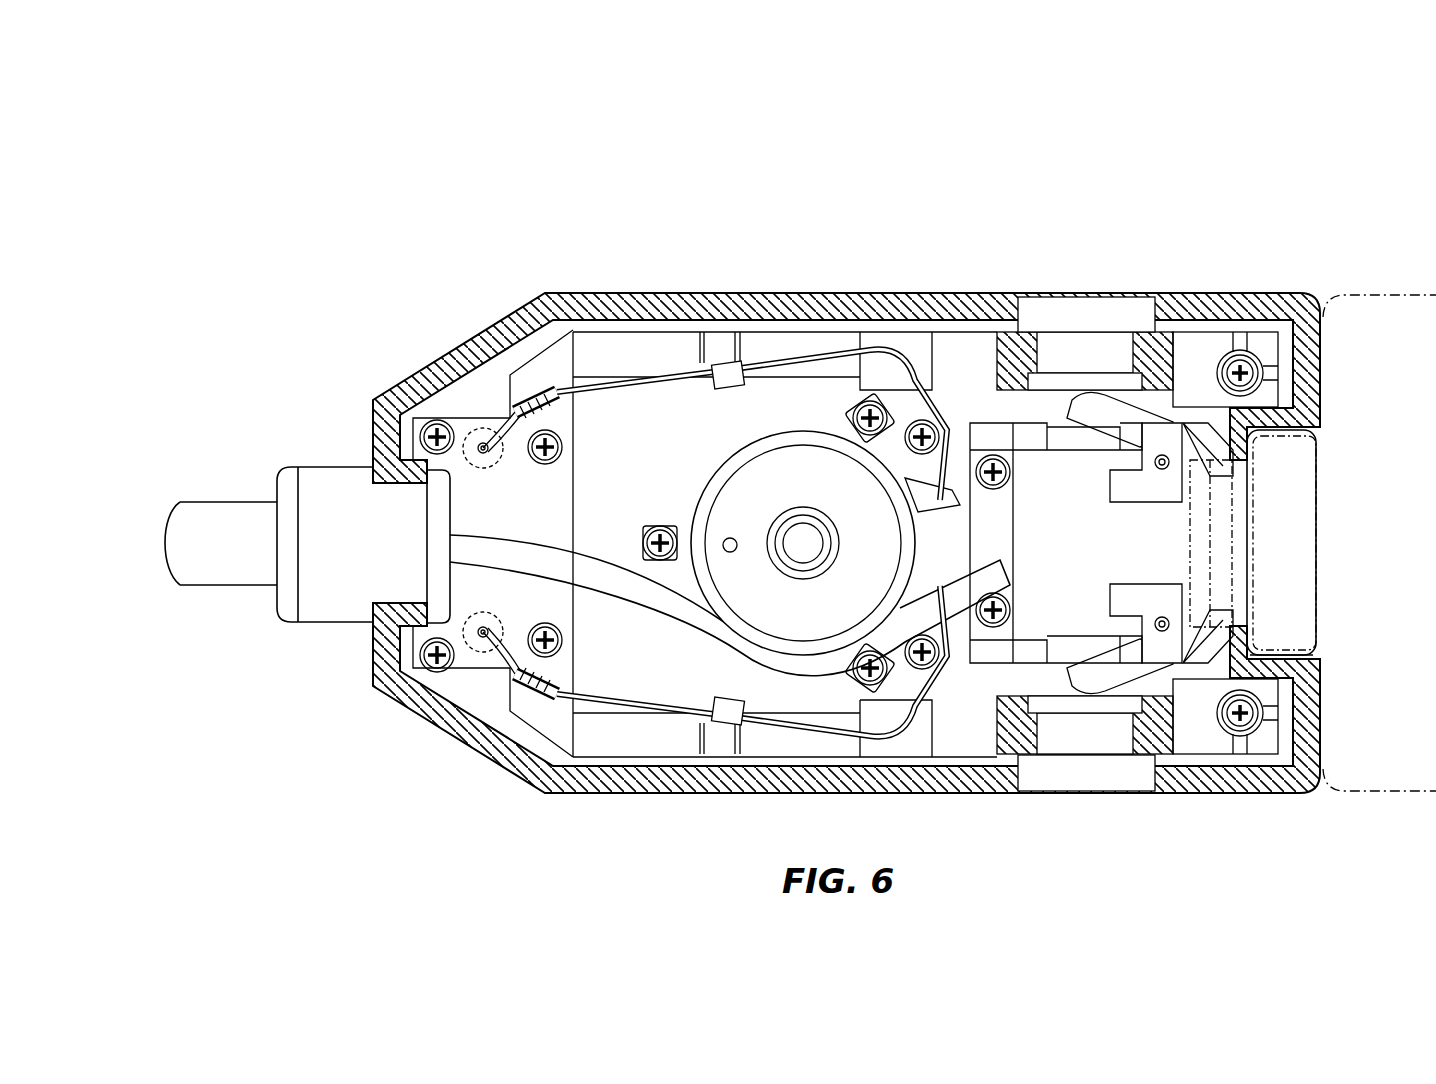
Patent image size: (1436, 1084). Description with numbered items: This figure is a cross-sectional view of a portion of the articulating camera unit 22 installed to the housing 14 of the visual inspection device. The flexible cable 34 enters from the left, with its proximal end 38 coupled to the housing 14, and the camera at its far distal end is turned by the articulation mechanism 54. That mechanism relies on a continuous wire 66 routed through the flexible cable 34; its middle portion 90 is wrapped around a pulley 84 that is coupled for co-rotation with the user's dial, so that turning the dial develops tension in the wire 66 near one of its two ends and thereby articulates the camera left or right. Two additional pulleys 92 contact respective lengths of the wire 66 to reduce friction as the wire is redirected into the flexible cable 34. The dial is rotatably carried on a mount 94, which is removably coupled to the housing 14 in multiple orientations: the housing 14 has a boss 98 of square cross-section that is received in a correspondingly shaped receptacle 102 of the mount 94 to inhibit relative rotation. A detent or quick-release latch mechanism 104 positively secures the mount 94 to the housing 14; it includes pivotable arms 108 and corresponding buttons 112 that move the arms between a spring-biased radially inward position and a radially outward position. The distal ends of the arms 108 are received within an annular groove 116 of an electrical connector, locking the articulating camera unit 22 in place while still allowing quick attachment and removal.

The housing 14 is at (1380, 297).
The articulating camera unit 22 is at (380, 180).
The flexible cable 34 is at (185, 592).
The proximal end 38 is at (278, 600).
The articulation mechanism 54 is at (650, 350).
The continuous wire 66 is at (631, 395).
The pulley 84 is at (760, 445).
The middle portion 90 is at (960, 597).
The additional pulleys 92 is at (476, 432).
The mount 94 is at (688, 795).
The boss 98 is at (1297, 462).
The receptacle 102 is at (1262, 655).
The quick-release latch mechanism 104 is at (1203, 383).
The pivotable arms 108 is at (1220, 443).
The buttons 112 is at (1093, 315).
The annular groove 116 is at (1220, 545).